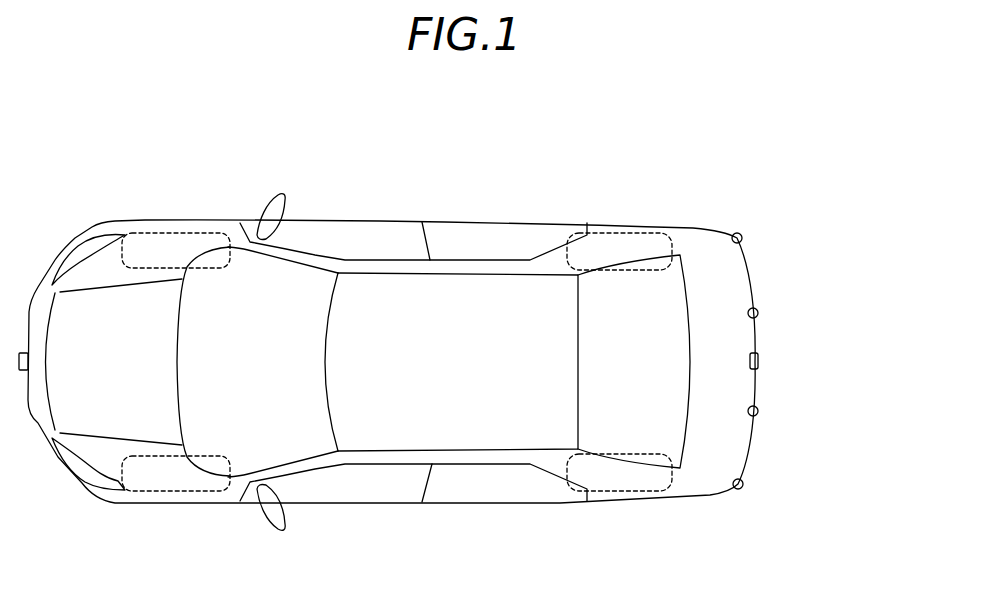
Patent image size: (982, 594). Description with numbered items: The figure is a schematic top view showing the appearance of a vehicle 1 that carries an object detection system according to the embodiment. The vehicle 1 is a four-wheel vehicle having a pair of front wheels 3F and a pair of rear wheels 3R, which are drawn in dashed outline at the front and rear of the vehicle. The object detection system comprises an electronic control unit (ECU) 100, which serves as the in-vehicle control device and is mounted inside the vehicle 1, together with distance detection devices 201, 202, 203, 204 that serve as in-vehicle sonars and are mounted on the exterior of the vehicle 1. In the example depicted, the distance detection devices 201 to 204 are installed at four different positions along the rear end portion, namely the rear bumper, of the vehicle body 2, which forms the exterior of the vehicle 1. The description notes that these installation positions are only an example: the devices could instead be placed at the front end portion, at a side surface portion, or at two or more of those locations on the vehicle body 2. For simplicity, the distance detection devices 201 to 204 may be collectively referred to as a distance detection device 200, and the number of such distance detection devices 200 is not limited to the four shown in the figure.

The vehicle 1 is at (460, 325).
The electronic control unit (ECU) 100 is at (460, 325).
The vehicle body 2 is at (700, 225).
The front wheels 3F is at (182, 233).
The rear wheels 3R is at (620, 233).
The distance detection device 200 is at (816, 331).
The distance detection device 201 is at (743, 484).
The distance detection device 202 is at (757, 413).
The distance detection device 203 is at (758, 309).
The distance detection device 204 is at (743, 233).